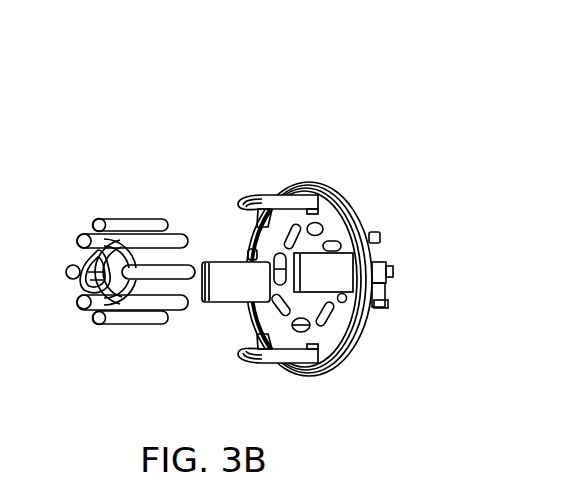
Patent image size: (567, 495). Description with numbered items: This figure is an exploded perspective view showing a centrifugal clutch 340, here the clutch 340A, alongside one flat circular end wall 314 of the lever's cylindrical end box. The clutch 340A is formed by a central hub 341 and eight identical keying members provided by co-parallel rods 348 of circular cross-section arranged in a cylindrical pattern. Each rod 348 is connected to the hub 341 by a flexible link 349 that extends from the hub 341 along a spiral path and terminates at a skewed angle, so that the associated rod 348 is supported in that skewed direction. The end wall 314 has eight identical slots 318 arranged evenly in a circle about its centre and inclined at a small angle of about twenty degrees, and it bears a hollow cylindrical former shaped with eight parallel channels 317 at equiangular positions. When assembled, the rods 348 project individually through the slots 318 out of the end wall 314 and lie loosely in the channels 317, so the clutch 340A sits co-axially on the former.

The centrifugal clutch 340 is at (146, 214).
The centrifugal clutch 340A is at (127, 128).
The keying members 348 is at (159, 240).
The flexible links 349 is at (113, 224).
The central hub 341 is at (123, 283).
The end wall 314 is at (338, 370).
The slots 318 is at (334, 248).
The channels 317 is at (388, 284).